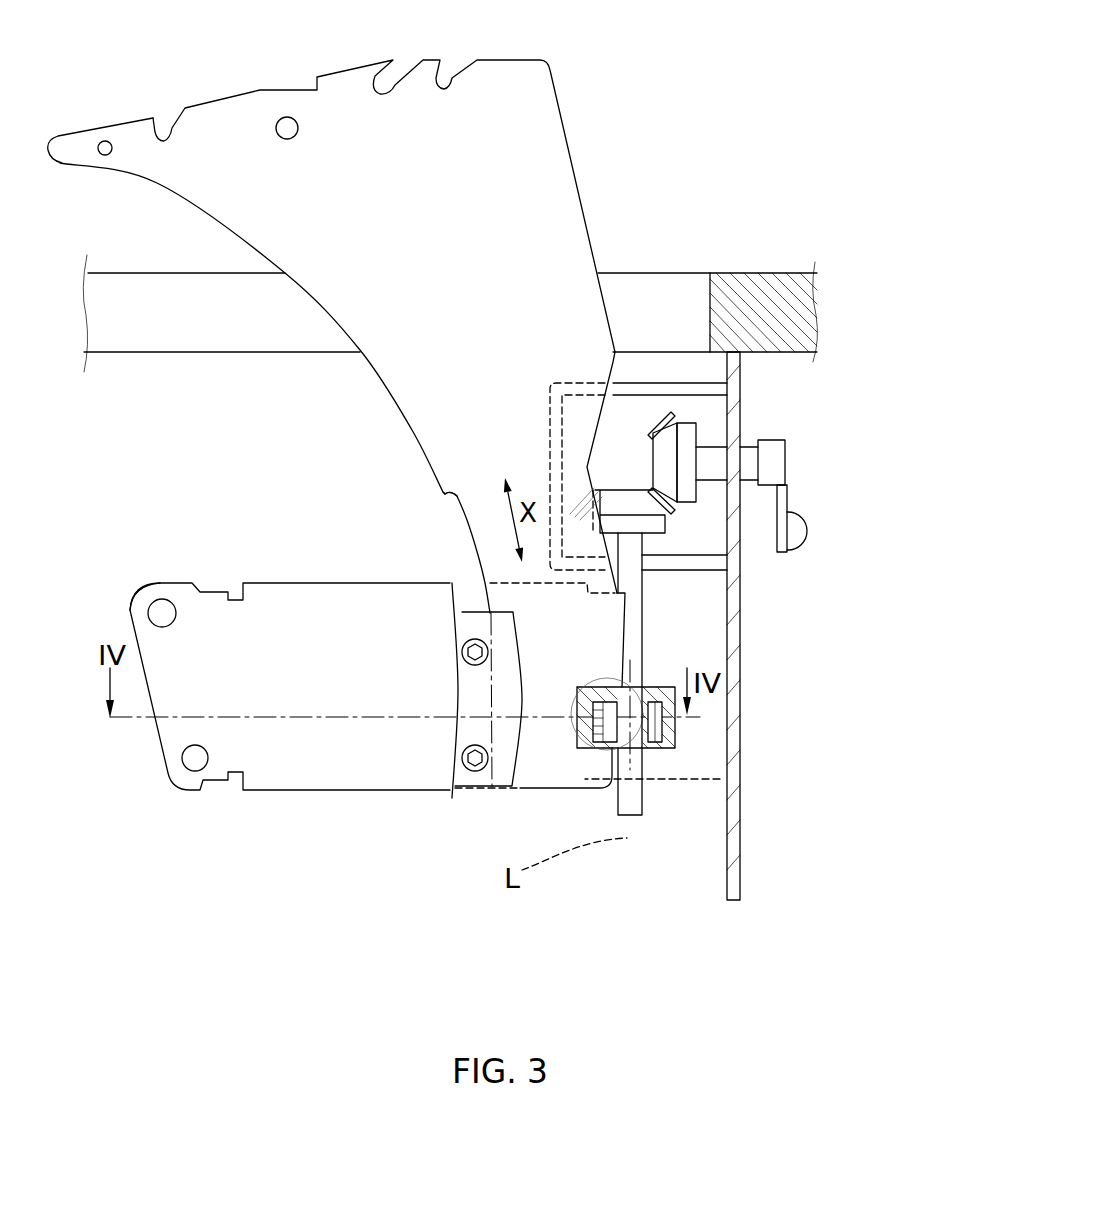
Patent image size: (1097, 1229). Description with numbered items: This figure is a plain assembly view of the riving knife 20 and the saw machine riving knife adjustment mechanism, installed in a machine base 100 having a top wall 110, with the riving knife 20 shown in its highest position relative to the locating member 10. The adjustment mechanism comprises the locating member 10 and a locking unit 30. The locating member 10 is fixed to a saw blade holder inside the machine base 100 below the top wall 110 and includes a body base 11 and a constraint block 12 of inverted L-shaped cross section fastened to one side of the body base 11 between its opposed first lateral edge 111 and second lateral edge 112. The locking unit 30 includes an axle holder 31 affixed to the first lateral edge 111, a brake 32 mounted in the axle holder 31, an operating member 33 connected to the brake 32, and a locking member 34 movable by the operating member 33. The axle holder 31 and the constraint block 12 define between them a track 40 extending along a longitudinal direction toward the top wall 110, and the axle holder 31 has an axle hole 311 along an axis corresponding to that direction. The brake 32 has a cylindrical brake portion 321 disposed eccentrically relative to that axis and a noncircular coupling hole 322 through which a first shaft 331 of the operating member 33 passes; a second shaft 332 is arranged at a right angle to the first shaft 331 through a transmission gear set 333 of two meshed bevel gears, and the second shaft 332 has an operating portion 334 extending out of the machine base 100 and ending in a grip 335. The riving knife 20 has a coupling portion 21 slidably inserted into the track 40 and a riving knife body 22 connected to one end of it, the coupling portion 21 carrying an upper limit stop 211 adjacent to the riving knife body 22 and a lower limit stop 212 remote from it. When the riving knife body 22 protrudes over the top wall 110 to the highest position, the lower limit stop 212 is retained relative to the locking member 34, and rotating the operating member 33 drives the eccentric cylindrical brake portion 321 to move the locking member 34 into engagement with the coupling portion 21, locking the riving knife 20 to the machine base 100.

The locating member 10 is at (260, 806).
The body base 11 is at (342, 773).
The constraint block 12 is at (465, 782).
The riving knife 20 is at (449, 466).
The coupling portion 21 is at (600, 640).
The riving knife body 22 is at (217, 206).
The locking unit 30 is at (689, 662).
The axle holder 31 is at (677, 732).
The brake 32 is at (655, 740).
The operating member 33 is at (713, 414).
The locking member 34 is at (590, 735).
The track 40 is at (482, 683).
The machine base 100 is at (783, 296).
The top wall 110 is at (732, 273).
The first lateral edge 111 is at (628, 612).
The second lateral edge 112 is at (130, 608).
The upper limit stop 211 is at (450, 497).
The lower limit stop 212 is at (740, 778).
The axle hole 311 is at (650, 688).
The cylindrical brake portion 321 is at (665, 735).
The noncircular coupling hole 322 is at (590, 745).
The first shaft 331 is at (663, 468).
The second shaft 332 is at (743, 462).
The transmission gear set 333 is at (630, 540).
The operating portion 334 is at (772, 458).
The grip 335 is at (807, 531).